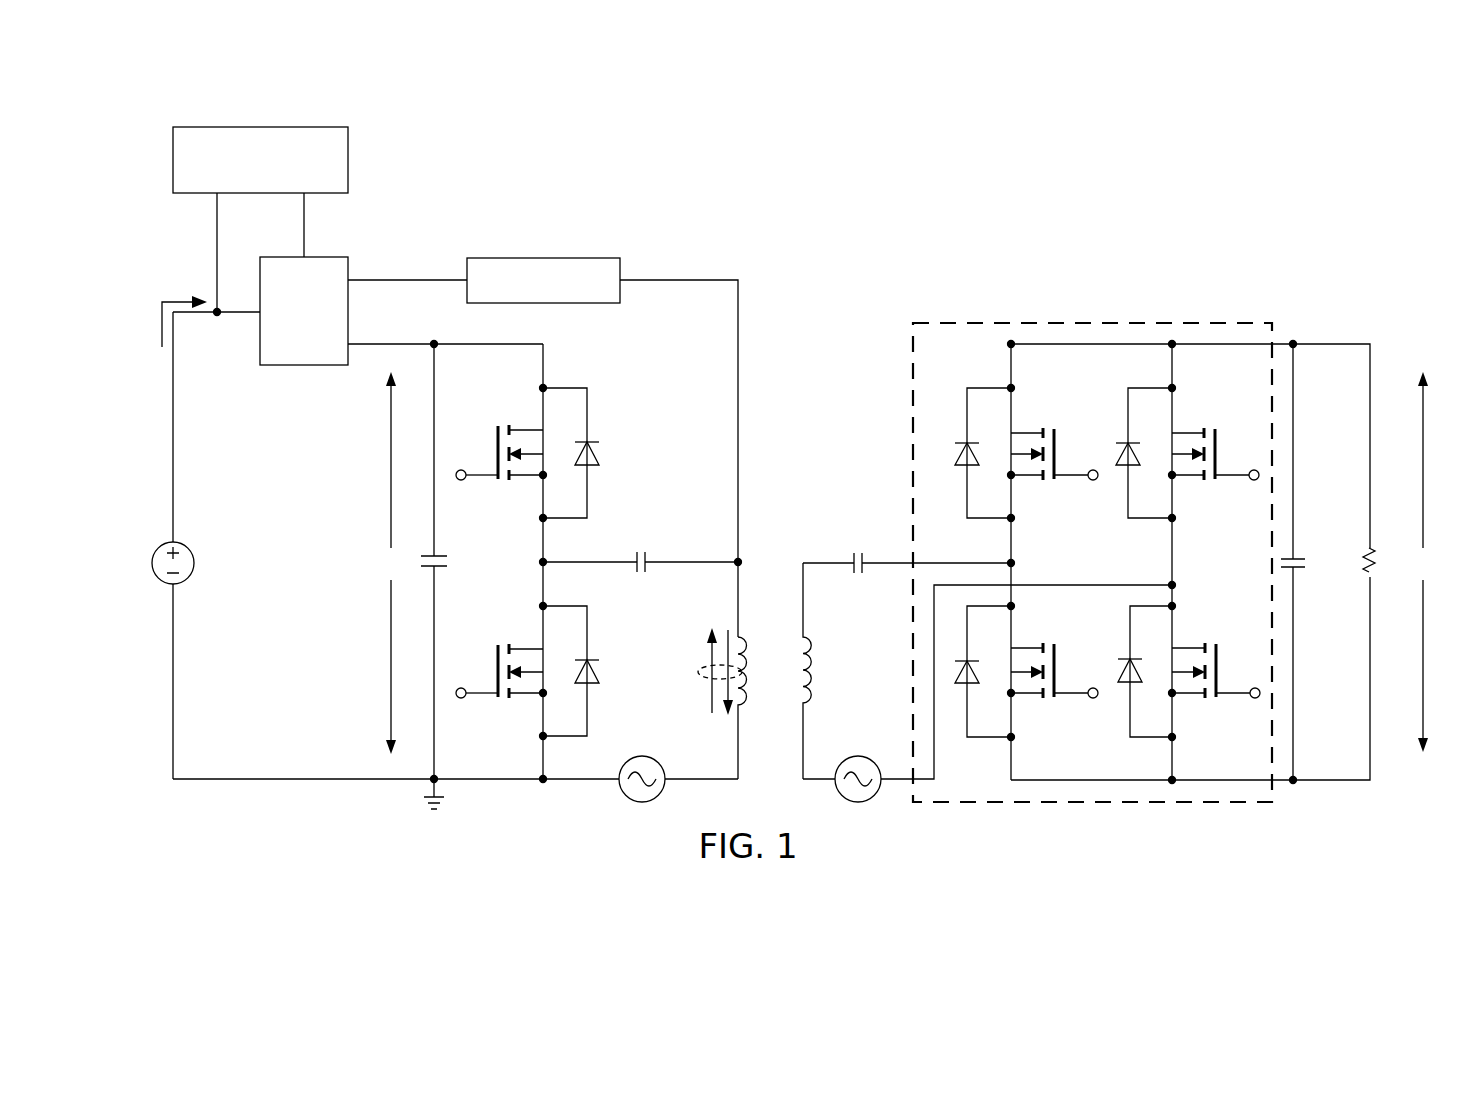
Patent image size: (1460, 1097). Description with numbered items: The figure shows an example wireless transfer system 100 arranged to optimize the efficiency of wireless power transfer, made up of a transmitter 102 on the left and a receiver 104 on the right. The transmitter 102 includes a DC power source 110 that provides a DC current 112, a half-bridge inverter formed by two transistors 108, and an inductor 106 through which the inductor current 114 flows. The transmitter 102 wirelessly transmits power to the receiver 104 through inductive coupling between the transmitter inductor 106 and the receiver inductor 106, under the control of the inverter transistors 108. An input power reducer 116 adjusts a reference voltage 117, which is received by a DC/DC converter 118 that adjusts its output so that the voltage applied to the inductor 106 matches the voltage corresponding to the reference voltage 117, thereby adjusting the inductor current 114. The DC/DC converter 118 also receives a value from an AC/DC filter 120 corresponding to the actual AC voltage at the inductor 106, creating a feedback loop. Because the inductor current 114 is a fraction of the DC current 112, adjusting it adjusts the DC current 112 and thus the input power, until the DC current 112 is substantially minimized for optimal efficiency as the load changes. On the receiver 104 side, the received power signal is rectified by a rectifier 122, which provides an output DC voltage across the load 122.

The wireless transfer system 100 is at (1228, 117).
The transmitter 102 is at (601, 177).
The receiver 104 is at (898, 272).
The inductor 106 is at (748, 705).
The transistors 108 is at (490, 438).
The DC power source 110 is at (152, 563).
The DC current 112 is at (180, 300).
The inductor current 114 is at (697, 672).
The input power reducer 116 is at (262, 126).
The reference voltage 117 is at (304, 223).
The DC/DC converter 118 is at (288, 343).
The AC/DC filter 120 is at (542, 258).
The rectifier 122 is at (1132, 315).